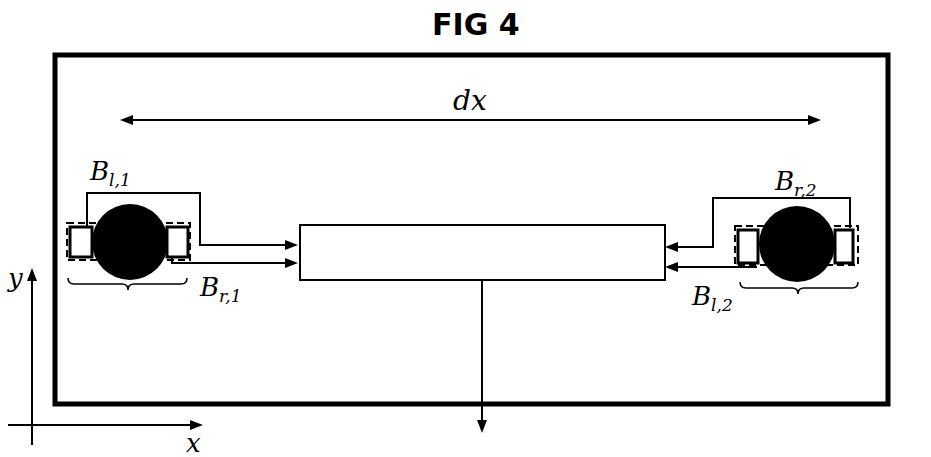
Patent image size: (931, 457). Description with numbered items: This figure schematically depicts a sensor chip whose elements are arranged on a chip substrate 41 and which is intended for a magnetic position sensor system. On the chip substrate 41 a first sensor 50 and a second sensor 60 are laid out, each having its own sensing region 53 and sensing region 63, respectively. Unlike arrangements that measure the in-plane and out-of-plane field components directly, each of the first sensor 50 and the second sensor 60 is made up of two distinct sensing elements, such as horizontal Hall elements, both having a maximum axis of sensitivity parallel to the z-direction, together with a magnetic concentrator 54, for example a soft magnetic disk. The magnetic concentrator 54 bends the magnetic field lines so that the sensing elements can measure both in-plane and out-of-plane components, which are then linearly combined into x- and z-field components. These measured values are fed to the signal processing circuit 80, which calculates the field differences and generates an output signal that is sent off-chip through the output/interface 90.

The chip substrate 41 is at (102, 104).
The signal processing circuit 80 is at (497, 266).
The output/interface 90 is at (482, 358).
The first sensor 50 is at (131, 271).
The sensing region 53 is at (88, 260).
The magnetic concentrator 54 is at (153, 270).
The second sensor 60 is at (806, 245).
The sensing region 63 is at (852, 228).